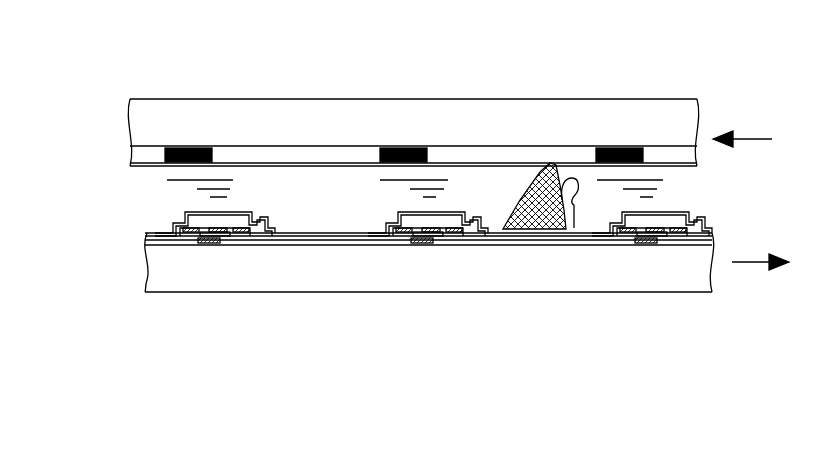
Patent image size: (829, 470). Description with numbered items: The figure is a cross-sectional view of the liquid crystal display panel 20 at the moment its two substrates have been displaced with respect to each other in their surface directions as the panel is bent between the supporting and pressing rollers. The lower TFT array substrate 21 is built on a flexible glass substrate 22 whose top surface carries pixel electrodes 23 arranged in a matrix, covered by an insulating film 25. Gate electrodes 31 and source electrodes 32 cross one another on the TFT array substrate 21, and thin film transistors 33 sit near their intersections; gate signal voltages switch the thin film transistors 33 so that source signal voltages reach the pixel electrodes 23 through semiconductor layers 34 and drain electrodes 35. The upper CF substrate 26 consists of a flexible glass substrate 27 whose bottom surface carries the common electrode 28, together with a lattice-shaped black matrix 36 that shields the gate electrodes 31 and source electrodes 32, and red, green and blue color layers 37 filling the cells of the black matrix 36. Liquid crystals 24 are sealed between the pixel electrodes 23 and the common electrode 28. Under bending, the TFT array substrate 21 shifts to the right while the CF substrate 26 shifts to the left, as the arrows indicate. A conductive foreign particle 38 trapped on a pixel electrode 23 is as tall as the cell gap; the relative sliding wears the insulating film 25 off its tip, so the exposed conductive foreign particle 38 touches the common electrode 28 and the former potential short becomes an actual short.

The liquid crystal display panel 20 is at (95, 88).
The TFT array substrate 21 is at (498, 292).
The flexible glass substrate 22 is at (675, 280).
The pixel electrodes 23 is at (317, 235).
The liquid crystals 24 is at (162, 190).
The insulating film 25 is at (350, 240).
The CF substrate 26 is at (600, 99).
The flexible glass substrate 27 is at (672, 116).
The common electrode 28 is at (322, 170).
The gate electrodes 31 is at (211, 302).
The source electrodes 32 is at (175, 247).
The thin film transistors 33 is at (197, 257).
The semiconductor layers 34 is at (233, 294).
The drain electrodes 35 is at (244, 282).
The black matrix 36 is at (189, 162).
The color layers 37 is at (260, 158).
The conductive foreign particle 38 is at (553, 232).